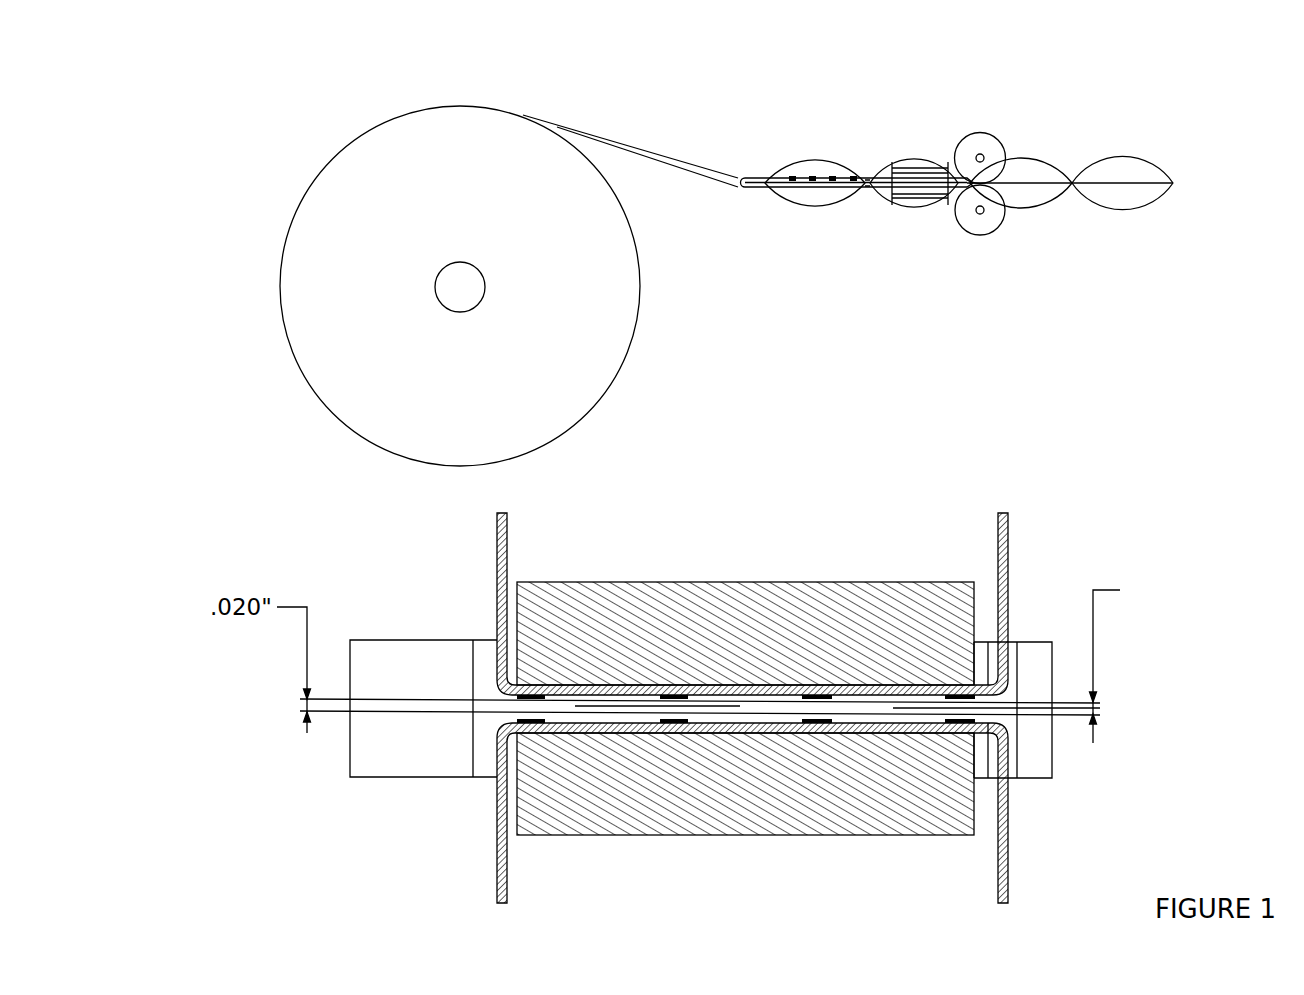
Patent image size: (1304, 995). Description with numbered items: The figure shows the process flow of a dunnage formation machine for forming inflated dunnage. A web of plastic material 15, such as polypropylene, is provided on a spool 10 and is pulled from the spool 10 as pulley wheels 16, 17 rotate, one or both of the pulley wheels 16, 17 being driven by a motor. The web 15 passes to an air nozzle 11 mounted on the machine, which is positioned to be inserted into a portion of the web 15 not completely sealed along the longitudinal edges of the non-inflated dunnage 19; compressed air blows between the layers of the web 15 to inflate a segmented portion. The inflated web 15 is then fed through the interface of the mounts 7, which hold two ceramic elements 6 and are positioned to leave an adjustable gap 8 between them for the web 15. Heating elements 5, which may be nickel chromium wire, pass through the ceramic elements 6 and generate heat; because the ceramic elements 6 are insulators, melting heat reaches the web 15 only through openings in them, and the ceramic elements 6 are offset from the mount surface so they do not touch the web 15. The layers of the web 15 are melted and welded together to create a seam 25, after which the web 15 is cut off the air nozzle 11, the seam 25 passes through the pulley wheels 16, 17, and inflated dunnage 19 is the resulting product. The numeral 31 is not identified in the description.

The heating elements 5 is at (1005, 738).
The ceramic elements 6 is at (782, 793).
The mounts 7 is at (1035, 680).
The gap 8 is at (1117, 661).
The spool 10 is at (582, 322).
The air nozzle 11 is at (758, 184).
The web of plastic material 15 is at (655, 153).
The pulley wheel 16 is at (982, 222).
The pulley wheel 17 is at (982, 145).
The dunnage 19 is at (1043, 196).
The seam 25 is at (1128, 183).
The electrodes 31 is at (853, 177).